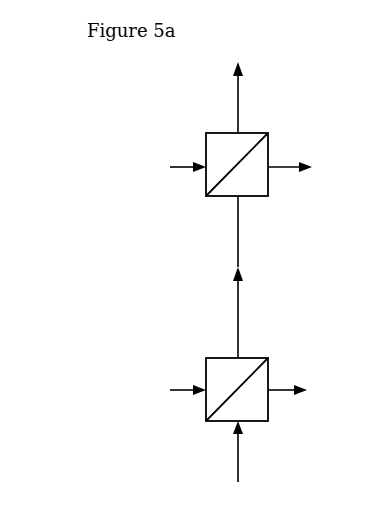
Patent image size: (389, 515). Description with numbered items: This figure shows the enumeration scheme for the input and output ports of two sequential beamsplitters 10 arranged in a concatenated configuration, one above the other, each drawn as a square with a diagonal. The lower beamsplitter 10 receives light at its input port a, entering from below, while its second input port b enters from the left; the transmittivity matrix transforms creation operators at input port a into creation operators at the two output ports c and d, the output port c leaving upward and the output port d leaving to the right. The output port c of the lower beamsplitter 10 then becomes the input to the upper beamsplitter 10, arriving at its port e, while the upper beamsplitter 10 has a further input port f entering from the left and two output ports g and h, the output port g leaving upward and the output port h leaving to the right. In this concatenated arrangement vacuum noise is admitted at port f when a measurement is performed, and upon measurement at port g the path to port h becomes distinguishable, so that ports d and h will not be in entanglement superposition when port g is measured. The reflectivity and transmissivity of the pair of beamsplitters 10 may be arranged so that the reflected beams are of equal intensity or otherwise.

The beamsplitter 10 is at (144, 277).
The input port a is at (248, 453).
The input port b is at (188, 403).
The output port c is at (225, 312).
The output port d is at (287, 375).
The port e is at (253, 231).
The input port f is at (188, 180).
The output port g is at (225, 97).
The output port h is at (290, 154).